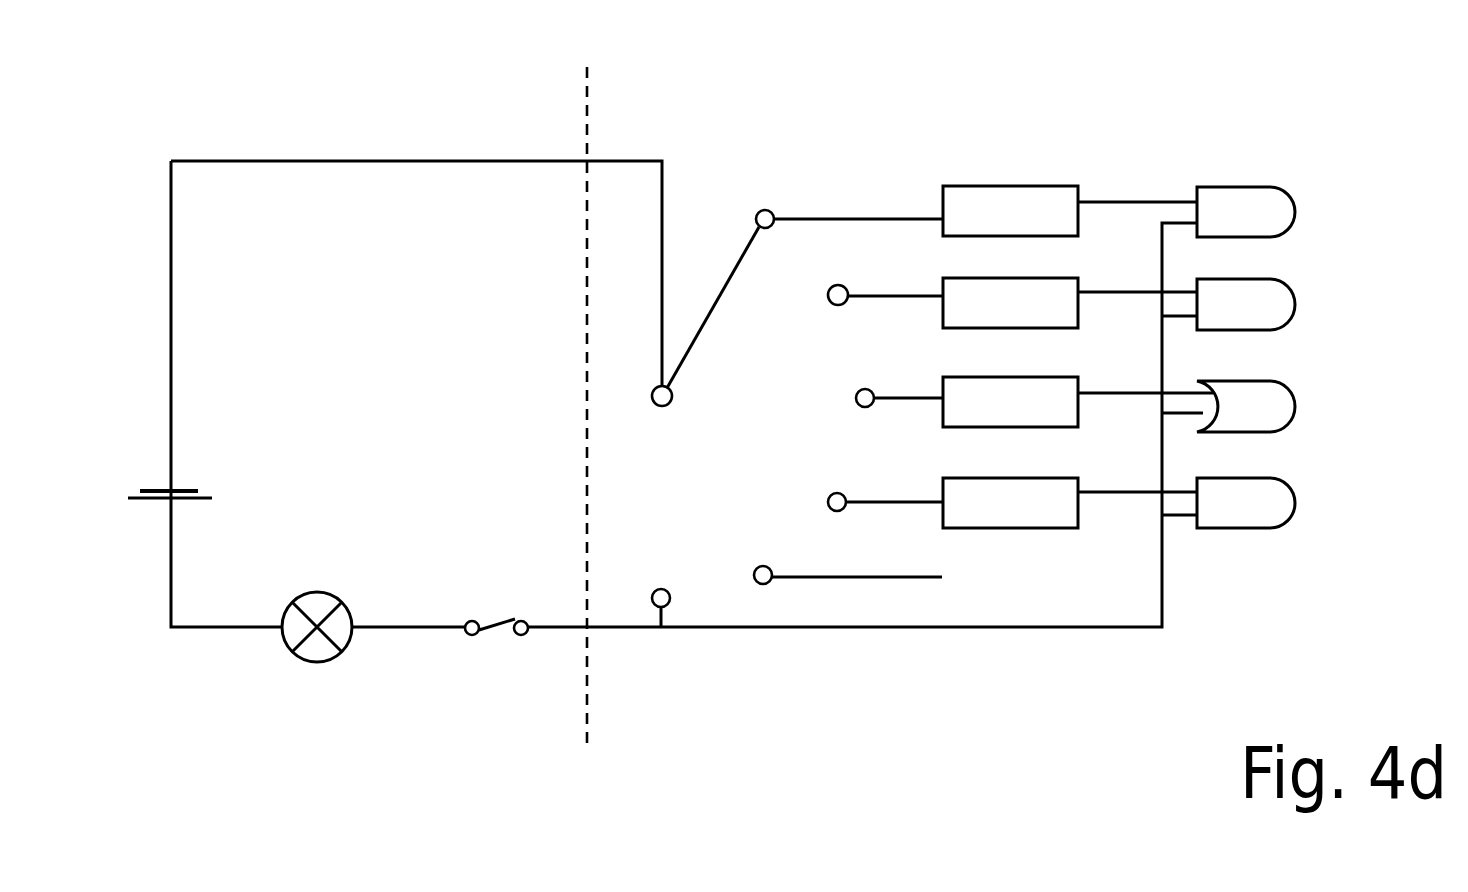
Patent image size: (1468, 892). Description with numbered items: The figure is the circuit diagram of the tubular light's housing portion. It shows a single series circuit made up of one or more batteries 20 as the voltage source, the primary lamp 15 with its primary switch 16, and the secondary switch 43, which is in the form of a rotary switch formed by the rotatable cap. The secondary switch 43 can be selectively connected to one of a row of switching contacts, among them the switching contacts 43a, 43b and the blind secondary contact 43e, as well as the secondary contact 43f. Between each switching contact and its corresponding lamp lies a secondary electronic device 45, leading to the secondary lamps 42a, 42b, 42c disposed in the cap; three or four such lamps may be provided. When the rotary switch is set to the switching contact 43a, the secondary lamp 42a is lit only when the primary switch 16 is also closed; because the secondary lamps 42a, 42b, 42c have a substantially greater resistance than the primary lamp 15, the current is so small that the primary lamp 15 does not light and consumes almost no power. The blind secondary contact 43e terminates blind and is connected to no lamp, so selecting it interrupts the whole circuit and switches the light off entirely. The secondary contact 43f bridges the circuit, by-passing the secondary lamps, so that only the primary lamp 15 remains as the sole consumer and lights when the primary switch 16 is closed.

The battery 20 is at (180, 467).
The primary lamp 15 is at (317, 603).
The primary switch 16 is at (496, 598).
The secondary switch 43 is at (661, 135).
The switching contact 43a is at (771, 210).
The switching contact 43b is at (832, 303).
The blind secondary contact 43e is at (757, 567).
The secondary contact 43f is at (641, 584).
The secondary electronic device 45 is at (1002, 162).
The secondary lamp 42a is at (1272, 410).
The secondary lamp 42b is at (1246, 304).
The secondary lamp 42c is at (1246, 406).